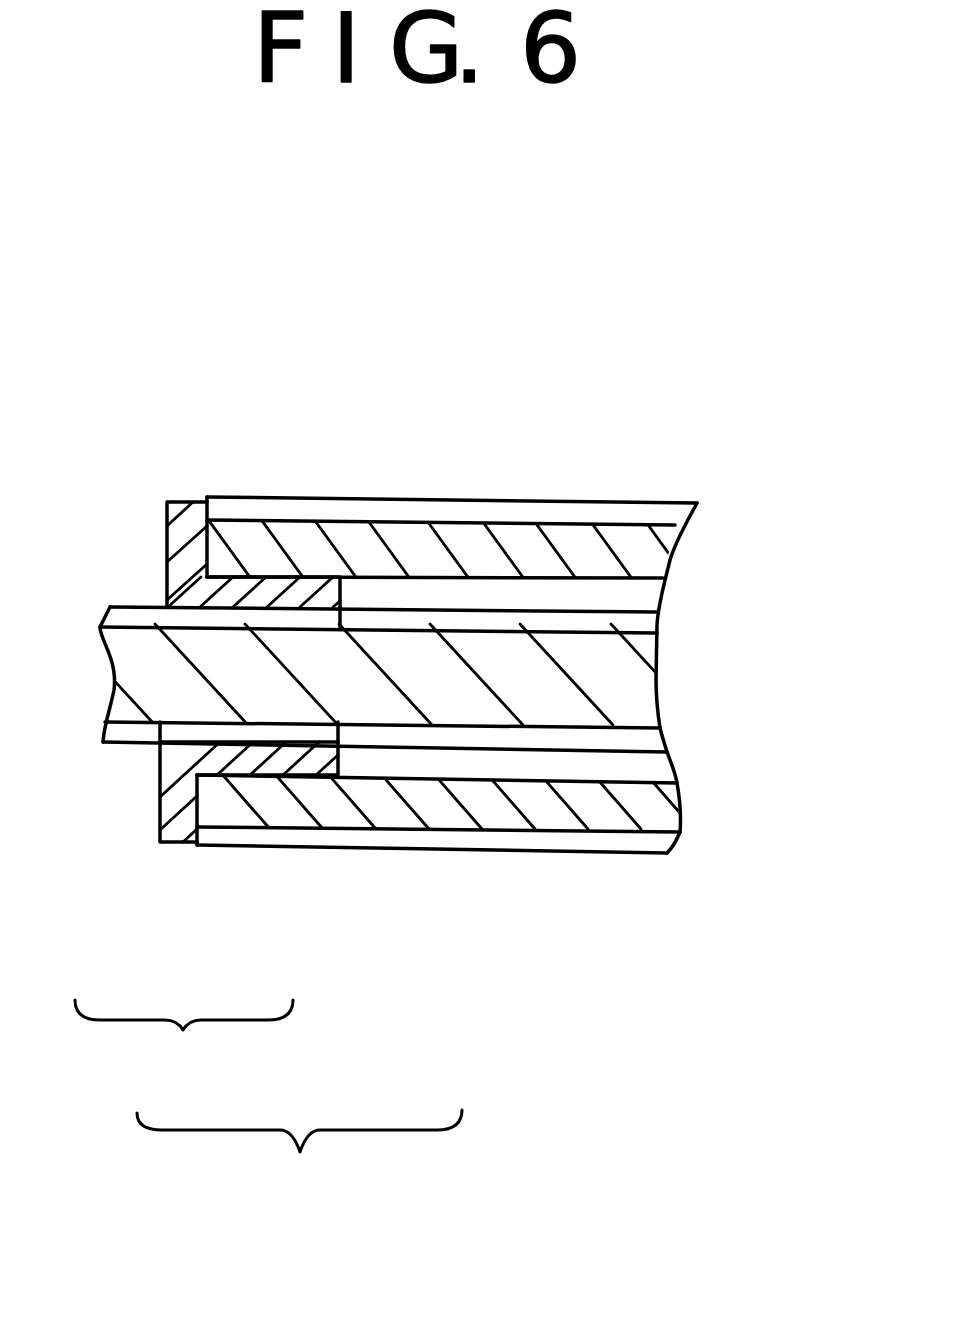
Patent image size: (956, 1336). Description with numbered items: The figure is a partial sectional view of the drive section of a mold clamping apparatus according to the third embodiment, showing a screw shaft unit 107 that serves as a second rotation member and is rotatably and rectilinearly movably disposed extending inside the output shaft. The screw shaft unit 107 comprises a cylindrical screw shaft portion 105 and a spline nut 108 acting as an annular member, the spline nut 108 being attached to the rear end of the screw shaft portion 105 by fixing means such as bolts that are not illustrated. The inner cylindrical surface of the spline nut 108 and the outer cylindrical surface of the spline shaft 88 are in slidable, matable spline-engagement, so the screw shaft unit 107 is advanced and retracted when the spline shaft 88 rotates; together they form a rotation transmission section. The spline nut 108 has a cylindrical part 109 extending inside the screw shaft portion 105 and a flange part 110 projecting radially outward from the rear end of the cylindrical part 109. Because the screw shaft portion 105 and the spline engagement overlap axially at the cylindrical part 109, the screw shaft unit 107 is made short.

The spline shaft 88 is at (500, 612).
The screw shaft portion 105 is at (462, 843).
The screw shaft unit 107 is at (333, 1220).
The spline nut 108 is at (226, 1100).
The cylindrical part 109 is at (280, 772).
The flange part 110 is at (167, 842).